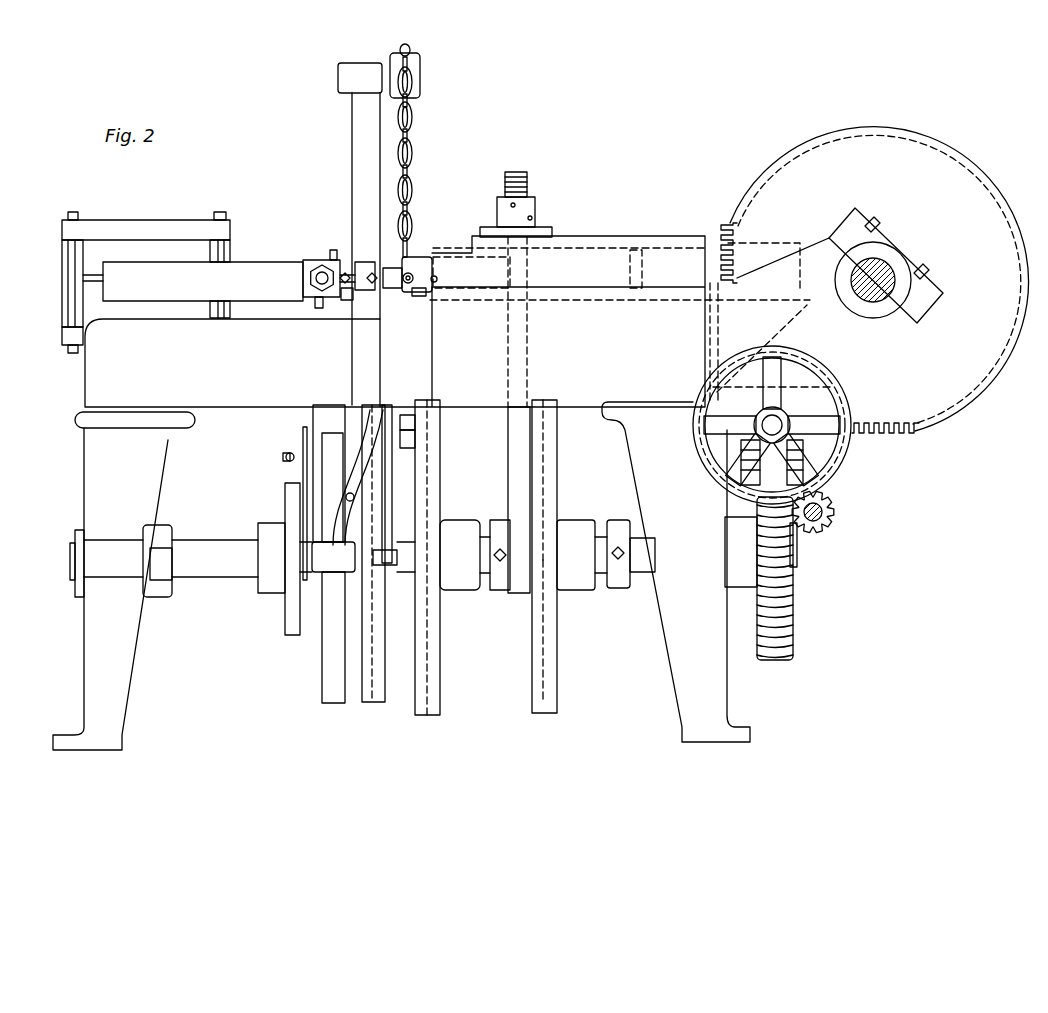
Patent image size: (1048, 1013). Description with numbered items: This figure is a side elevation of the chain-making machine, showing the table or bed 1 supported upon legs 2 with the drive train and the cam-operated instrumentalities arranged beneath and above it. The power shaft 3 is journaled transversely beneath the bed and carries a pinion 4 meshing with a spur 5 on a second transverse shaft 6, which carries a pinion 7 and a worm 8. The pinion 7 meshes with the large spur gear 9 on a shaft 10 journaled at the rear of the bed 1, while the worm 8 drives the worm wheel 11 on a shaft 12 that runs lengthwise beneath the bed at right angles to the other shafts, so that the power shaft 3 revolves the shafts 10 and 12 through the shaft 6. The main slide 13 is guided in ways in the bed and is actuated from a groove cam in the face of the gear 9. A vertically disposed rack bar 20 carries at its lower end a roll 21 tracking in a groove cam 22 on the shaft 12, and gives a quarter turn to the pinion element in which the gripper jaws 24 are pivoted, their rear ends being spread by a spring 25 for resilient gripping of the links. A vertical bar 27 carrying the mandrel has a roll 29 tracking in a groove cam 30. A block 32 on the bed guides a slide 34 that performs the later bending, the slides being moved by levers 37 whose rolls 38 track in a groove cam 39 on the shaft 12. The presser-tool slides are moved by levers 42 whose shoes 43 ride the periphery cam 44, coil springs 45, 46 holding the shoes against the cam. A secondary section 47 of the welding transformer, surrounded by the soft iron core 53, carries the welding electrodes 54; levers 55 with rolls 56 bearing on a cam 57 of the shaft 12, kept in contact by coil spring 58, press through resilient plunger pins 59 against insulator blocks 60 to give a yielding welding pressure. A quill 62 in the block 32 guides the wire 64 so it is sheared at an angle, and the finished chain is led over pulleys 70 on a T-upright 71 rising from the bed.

The table or bed 1 is at (272, 374).
The legs 2 is at (401, 576).
The power shaft 3 is at (835, 508).
The pinion 4 is at (835, 516).
The spur 5 is at (855, 436).
The shaft 6 is at (775, 427).
The pinion 7 is at (748, 445).
The worm 8 is at (760, 455).
The large spur gear 9 is at (879, 279).
The shaft 10 is at (895, 281).
The worm wheel 11 is at (795, 570).
The shaft 12 is at (205, 540).
The main slide 13 is at (722, 230).
The rack bar 20 is at (528, 186).
The roll 21 is at (545, 560).
The groove cam 22 is at (545, 480).
The gripper jaws 24 is at (421, 258).
The spring 25 is at (470, 280).
The vertically disposed bar 27 is at (418, 442).
The roll 29 is at (418, 425).
The groove cam 30 is at (440, 498).
The block 32 is at (433, 283).
The slide 34 is at (395, 292).
The levers 37 is at (396, 500).
The rolls 38 is at (375, 566).
The groove cam 39 is at (373, 658).
The levers 42 is at (372, 292).
The shoes 43 is at (343, 560).
The periphery cam 44 is at (328, 676).
The coil spring 45 is at (348, 433).
The coil spring 46 is at (355, 500).
The secondary section 47 is at (203, 281).
The soft iron core 53 is at (90, 290).
The welding electrodes 54 is at (346, 301).
The levers 55 is at (316, 306).
The rolls 56 is at (280, 580).
The cam 57 is at (285, 507).
The coil spring 58 is at (286, 452).
The resilient plunger pins 59 is at (303, 280).
The insulator blocks 60 is at (310, 262).
The quill 62 is at (406, 274).
The wire 64 is at (421, 293).
The pulleys 70 is at (422, 71).
The T-upright 71 is at (352, 156).